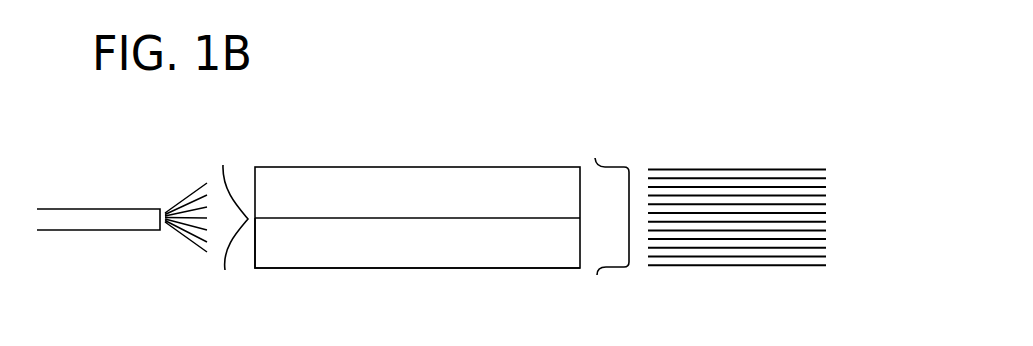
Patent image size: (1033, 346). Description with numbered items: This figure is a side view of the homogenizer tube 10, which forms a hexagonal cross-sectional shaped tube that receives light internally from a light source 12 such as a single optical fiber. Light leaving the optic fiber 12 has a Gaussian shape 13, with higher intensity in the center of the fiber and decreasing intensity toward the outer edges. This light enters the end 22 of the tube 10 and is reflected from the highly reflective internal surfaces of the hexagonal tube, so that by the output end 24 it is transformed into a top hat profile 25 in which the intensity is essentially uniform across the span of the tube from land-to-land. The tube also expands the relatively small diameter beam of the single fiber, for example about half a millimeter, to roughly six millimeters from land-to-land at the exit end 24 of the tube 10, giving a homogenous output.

The homogenizer tube 10 is at (416, 156).
The light source 12 is at (97, 231).
The Gaussian shape 13 is at (224, 266).
The end of tube 22 is at (255, 257).
The output end 24 is at (585, 258).
The top hat profile 25 is at (617, 268).